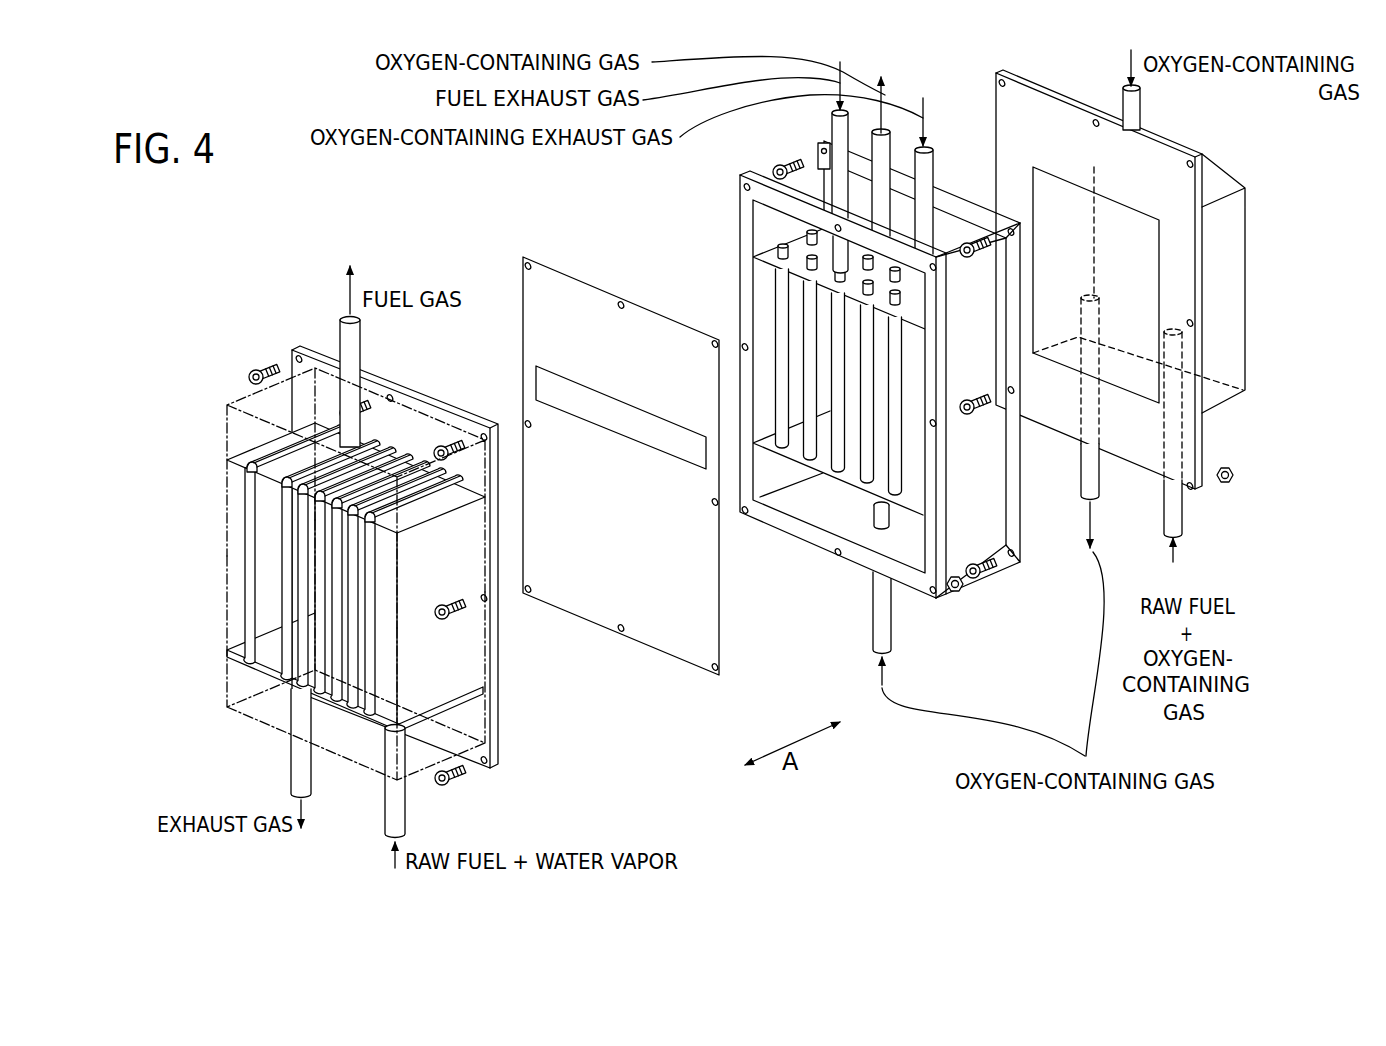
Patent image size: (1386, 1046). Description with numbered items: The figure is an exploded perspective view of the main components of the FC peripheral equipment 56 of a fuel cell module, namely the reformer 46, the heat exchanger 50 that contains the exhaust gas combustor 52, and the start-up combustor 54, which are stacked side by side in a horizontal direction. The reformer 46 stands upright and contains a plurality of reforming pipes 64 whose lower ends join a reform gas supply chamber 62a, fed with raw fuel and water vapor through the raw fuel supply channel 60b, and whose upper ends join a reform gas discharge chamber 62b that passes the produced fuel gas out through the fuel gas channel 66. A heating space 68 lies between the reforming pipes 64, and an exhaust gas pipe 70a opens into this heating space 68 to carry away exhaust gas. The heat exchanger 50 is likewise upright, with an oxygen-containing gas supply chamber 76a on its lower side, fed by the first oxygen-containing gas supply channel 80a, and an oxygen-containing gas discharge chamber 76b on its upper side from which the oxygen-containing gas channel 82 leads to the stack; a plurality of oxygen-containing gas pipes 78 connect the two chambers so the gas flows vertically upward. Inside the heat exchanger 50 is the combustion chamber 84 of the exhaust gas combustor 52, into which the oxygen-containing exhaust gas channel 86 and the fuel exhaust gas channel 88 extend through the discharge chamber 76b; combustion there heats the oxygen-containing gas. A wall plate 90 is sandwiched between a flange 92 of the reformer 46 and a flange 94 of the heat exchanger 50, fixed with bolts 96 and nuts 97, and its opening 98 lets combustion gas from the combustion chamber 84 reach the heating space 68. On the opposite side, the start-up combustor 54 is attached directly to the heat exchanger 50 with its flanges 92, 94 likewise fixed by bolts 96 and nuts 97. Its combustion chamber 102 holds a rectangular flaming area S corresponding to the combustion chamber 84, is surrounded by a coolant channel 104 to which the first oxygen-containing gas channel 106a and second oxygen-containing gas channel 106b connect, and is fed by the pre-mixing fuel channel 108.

The reformer 46 is at (243, 573).
The heat exchanger 50 is at (981, 532).
The exhaust gas combustor 52 is at (798, 307).
The start-up combustor 54 is at (1239, 237).
The FC peripheral equipment 56 is at (384, 234).
The raw fuel supply channel 60b is at (402, 824).
The reform gas supply chamber 62a is at (343, 735).
The reform gas discharge chamber 62b is at (245, 428).
The reforming pipes 64 is at (288, 604).
The fuel gas channel 66 is at (362, 345).
The heating space 68 is at (268, 534).
The exhaust gas pipe 70a is at (290, 770).
The oxygen-containing gas supply chamber 76a is at (808, 497).
The oxygen-containing gas discharge chamber 76b is at (778, 226).
The oxygen-containing gas pipes 78 is at (893, 347).
The first oxygen-containing gas supply channel 80a is at (871, 618).
The oxygen-containing gas channel 82 is at (815, 156).
The combustion chamber 84 is at (885, 369).
The oxygen-containing exhaust gas channel 86 is at (926, 178).
The fuel exhaust gas channel 88 is at (830, 127).
The wall plate 90 is at (699, 658).
The flange 92 is at (498, 710).
The flange 94 is at (1014, 470).
The bolts 96 is at (461, 779).
The nuts 97 is at (964, 593).
The opening 98 is at (626, 426).
The combustion chamber 102 is at (1120, 222).
The coolant channel 104 is at (1232, 283).
The first oxygen-containing gas channel 106a is at (1137, 108).
The second oxygen-containing gas channel 106b is at (1100, 485).
The pre-mixing fuel channel 108 is at (1180, 519).
The flaming area S is at (1075, 205).